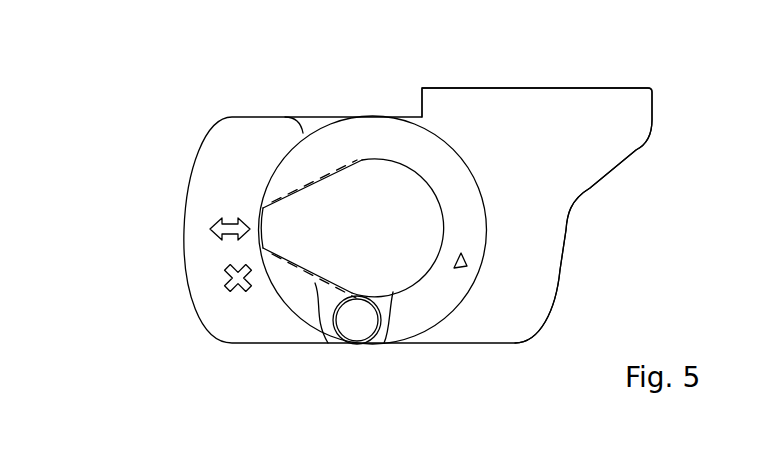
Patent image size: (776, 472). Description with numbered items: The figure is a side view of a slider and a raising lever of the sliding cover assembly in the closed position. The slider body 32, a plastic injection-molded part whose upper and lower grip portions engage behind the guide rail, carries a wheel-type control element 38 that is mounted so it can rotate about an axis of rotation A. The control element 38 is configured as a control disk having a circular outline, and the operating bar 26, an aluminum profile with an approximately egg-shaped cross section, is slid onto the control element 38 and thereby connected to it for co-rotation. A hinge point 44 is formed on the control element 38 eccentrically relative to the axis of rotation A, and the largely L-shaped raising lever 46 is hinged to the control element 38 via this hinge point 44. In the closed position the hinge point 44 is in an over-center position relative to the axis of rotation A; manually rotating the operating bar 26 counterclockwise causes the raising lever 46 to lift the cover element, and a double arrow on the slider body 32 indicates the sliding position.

The operating bar 26 is at (295, 270).
The slider body 32 is at (217, 200).
The control element 38 is at (353, 128).
The hinge point 44 is at (357, 318).
The raising lever 46 is at (583, 149).
The axis of rotation A is at (370, 227).